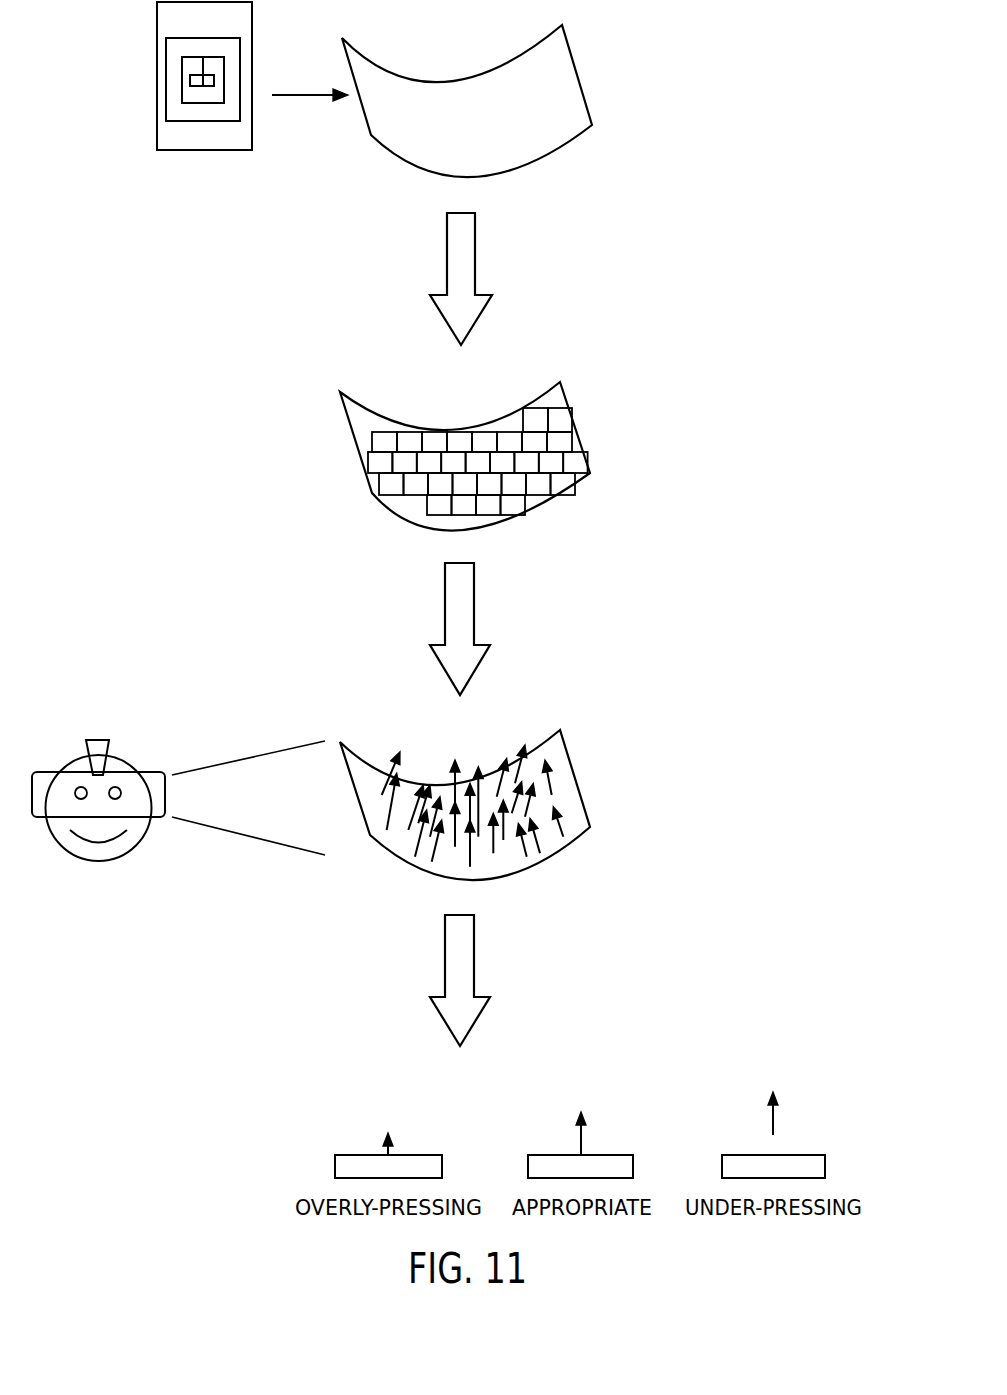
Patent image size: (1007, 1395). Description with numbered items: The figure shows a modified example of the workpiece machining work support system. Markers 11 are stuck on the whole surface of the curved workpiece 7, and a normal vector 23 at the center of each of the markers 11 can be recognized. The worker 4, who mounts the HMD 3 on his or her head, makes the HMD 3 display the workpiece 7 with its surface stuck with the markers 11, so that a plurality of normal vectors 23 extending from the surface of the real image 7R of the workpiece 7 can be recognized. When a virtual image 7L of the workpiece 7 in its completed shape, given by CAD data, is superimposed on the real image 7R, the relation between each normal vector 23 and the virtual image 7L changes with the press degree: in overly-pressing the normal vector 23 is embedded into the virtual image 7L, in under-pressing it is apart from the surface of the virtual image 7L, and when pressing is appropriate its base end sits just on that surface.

The marker 11 is at (157, 64).
The workpiece 7 is at (577, 90).
The real image of the workpiece 7R is at (575, 772).
The virtual image of the workpiece 7L is at (422, 1153).
The normal vector 23 is at (395, 757).
The worker 4 is at (122, 760).
The HMD 3 is at (152, 773).